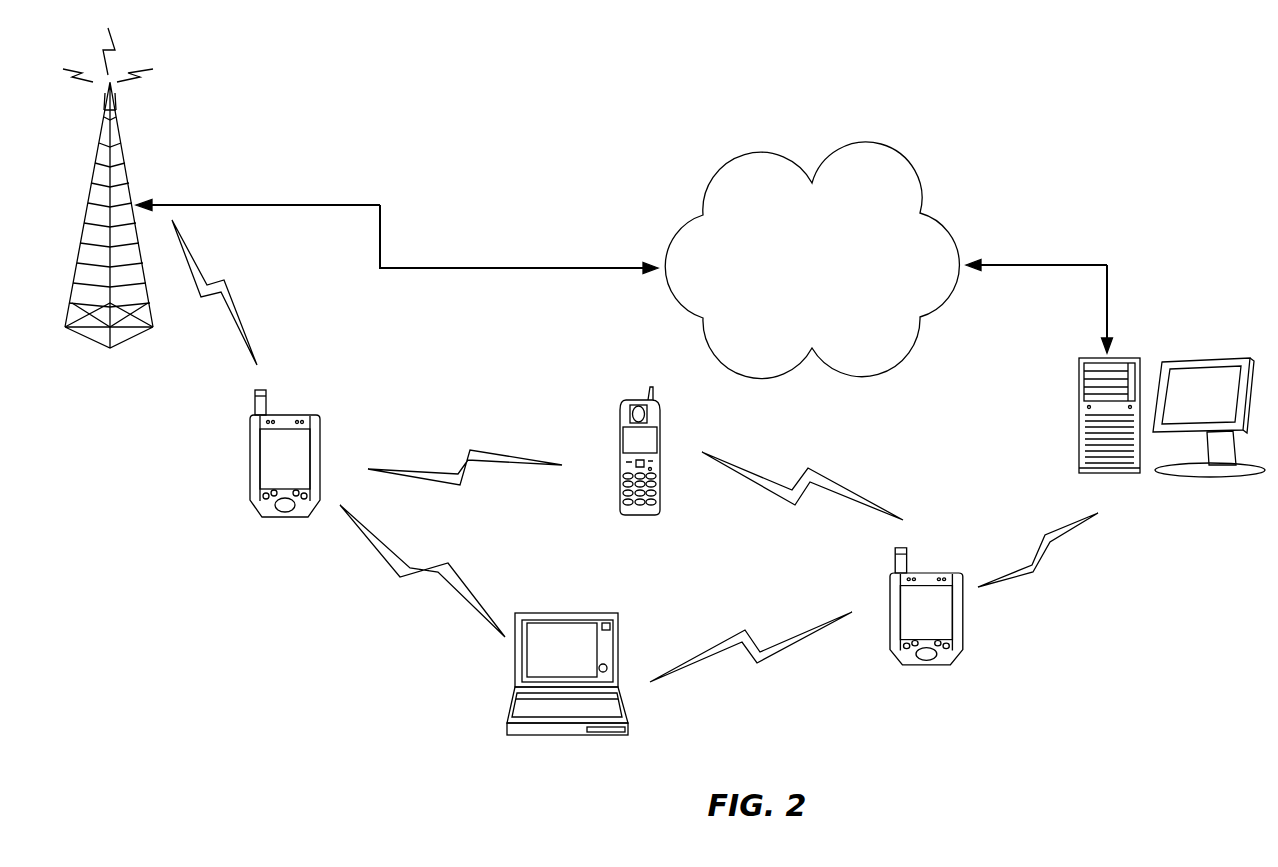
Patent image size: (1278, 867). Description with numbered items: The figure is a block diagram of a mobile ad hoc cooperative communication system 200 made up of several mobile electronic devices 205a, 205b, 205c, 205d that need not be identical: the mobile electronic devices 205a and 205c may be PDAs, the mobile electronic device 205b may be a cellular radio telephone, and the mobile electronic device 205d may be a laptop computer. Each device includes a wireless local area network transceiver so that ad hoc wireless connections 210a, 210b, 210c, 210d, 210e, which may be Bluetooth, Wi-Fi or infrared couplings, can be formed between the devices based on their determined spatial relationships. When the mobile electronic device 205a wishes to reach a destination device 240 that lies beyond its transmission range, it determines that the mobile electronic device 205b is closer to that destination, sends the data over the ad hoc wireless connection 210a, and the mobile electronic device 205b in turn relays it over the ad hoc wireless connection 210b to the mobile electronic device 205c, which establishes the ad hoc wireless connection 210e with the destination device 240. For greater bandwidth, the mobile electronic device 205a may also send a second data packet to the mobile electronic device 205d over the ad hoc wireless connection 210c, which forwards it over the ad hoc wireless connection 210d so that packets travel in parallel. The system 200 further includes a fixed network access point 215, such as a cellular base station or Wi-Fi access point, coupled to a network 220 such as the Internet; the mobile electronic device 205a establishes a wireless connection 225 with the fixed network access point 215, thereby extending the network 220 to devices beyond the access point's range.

The mobile ad hoc cooperative communication system 200 is at (488, 175).
The fixed network access point 215 is at (110, 222).
The wireless connection 225 is at (203, 275).
The network 220 is at (812, 260).
The destination device 240 is at (1172, 439).
The mobile electronic device 205a is at (283, 490).
The mobile electronic device 205b is at (638, 489).
The mobile electronic device 205c is at (932, 637).
The mobile electronic device 205d is at (567, 707).
The ad hoc wireless connection 210a is at (487, 449).
The ad hoc wireless connection 210b is at (747, 467).
The ad hoc wireless connection 210c is at (408, 560).
The ad hoc wireless connection 210d is at (752, 633).
The ad hoc wireless connection 210e is at (1053, 543).